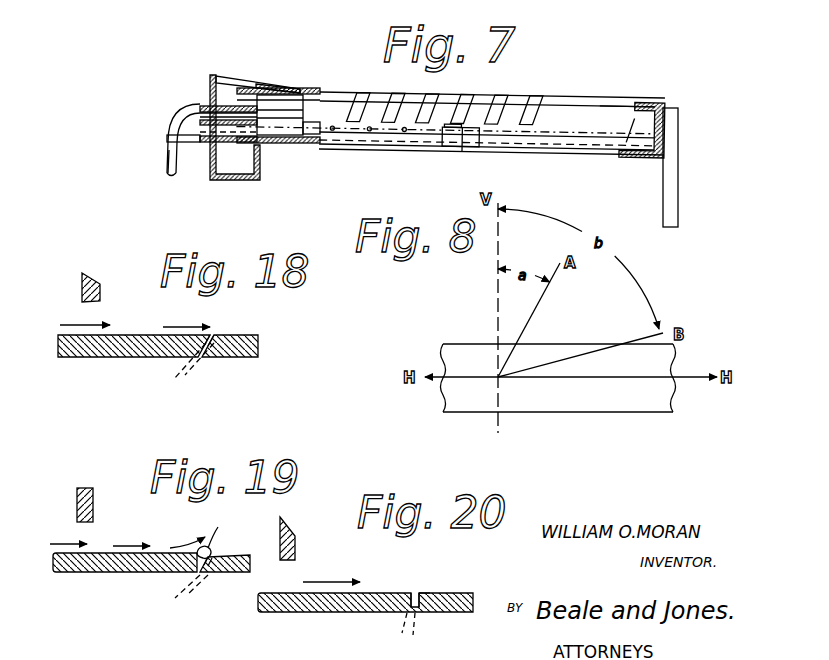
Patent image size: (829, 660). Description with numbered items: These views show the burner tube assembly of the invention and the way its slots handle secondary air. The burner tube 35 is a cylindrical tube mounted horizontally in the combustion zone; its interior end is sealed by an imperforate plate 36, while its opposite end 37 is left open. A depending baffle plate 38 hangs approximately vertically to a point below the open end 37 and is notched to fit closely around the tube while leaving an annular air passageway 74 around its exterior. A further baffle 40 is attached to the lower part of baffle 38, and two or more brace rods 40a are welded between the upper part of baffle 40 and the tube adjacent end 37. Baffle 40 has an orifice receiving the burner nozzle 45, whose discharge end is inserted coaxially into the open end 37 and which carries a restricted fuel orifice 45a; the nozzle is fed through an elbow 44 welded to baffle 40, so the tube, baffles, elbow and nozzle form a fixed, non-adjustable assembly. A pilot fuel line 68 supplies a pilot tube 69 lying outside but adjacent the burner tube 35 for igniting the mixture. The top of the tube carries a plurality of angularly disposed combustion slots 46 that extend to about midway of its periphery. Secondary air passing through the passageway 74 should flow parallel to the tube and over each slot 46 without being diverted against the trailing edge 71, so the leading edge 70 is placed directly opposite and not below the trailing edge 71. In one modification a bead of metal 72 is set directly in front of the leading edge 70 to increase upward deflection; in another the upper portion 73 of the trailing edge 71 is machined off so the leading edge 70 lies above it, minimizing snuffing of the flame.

In FIG. 7, the burner tube 35 is at (580, 107).
In FIG. 8, the burner tube 35 is at (603, 403).
In FIG. 18, the burner tube 35 is at (93, 353).
In FIG. 19, the burner tube 35 is at (92, 572).
In FIG. 20, the burner tube 35 is at (333, 612).
In FIG. 7, the imperforate plate 36 is at (666, 105).
In FIG. 7, the open end 37 is at (250, 88).
In FIG. 18, the baffle plate 38 is at (100, 287).
In FIG. 19, the baffle plate 38 is at (93, 497).
In FIG. 20, the baffle plate 38 is at (295, 541).
In FIG. 7, the baffle plate 40 is at (211, 75).
In FIG. 7, the brace rods 40a is at (263, 86).
In FIG. 7, the elbow 44 is at (181, 116).
In FIG. 7, the burner nozzle 45 is at (218, 100).
In FIG. 7, the restricted fuel orifice 45a is at (282, 90).
In FIG. 7, the combustion slots 46 is at (478, 100).
In FIG. 18, the combustion slots 46 is at (198, 368).
In FIG. 19, the combustion slots 46 is at (176, 598).
In FIG. 20, the combustion slots 46 is at (410, 635).
In FIG. 7, the pilot fuel line 68 is at (167, 157).
In FIG. 7, the pilot tube 69 is at (483, 153).
In FIG. 18, the leading edge 70 is at (211, 338).
In FIG. 19, the leading edge 70 is at (212, 551).
In FIG. 20, the leading edge 70 is at (413, 594).
In FIG. 18, the trailing edge 71 is at (215, 350).
In FIG. 19, the trailing edge 71 is at (213, 566).
In FIG. 20, the trailing edge 71 is at (419, 594).
In FIG. 19, the bead of metal 72 is at (215, 540).
In FIG. 20, the upper portion of trailing edge 73 is at (424, 596).
In FIG. 18, the annular air passageway 74 is at (83, 311).
In FIG. 19, the annular air passageway 74 is at (83, 532).
In FIG. 20, the annular air passageway 74 is at (290, 576).